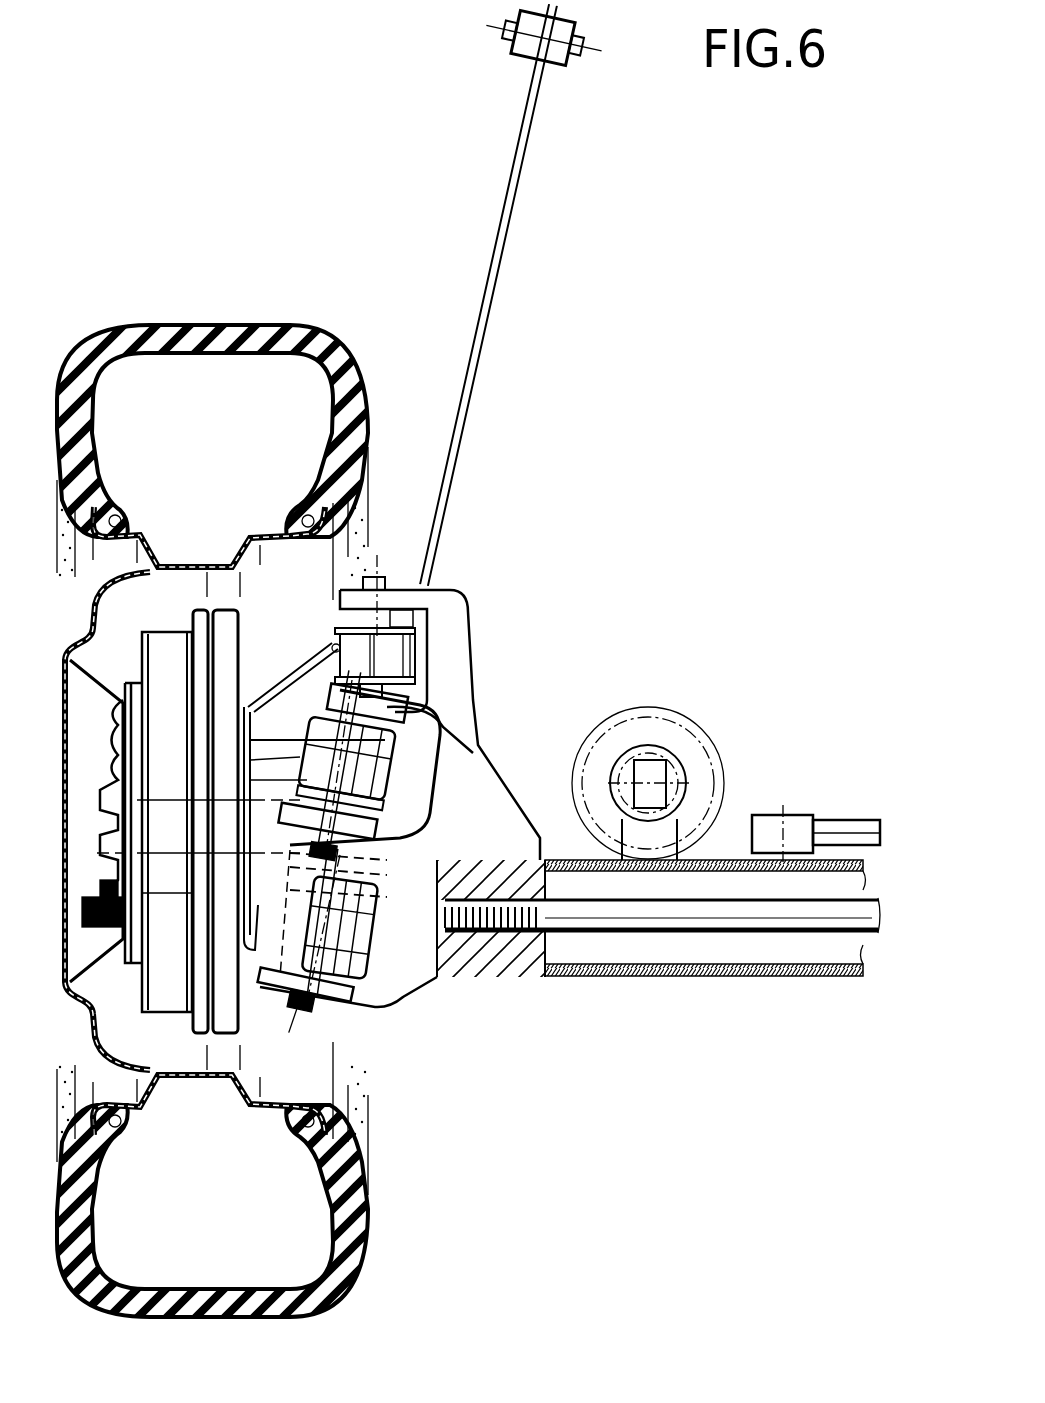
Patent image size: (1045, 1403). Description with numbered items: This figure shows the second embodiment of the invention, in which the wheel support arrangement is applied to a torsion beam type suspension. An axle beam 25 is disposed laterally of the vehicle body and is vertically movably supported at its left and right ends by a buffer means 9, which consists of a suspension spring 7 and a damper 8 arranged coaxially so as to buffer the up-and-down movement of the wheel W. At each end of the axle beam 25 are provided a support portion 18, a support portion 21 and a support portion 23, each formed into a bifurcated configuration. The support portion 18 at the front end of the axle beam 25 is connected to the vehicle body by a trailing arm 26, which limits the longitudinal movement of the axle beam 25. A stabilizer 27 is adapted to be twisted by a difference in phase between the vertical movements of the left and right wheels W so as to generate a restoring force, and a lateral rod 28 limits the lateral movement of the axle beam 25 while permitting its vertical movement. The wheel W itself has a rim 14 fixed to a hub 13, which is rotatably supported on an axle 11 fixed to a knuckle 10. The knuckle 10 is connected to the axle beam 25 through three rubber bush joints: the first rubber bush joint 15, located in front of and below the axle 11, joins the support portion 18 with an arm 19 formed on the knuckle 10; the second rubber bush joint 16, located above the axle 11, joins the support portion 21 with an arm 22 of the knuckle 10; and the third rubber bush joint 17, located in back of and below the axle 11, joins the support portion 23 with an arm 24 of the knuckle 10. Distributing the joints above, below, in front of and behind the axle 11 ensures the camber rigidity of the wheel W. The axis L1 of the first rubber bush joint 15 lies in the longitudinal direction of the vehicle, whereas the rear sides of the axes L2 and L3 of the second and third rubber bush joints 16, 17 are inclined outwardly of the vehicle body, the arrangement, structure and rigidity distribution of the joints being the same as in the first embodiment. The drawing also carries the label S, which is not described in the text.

The wheel W is at (133, 325).
The suspension spring 7 is at (647, 707).
The damper 8 is at (683, 773).
The buffer means 9 is at (742, 717).
The knuckle 10 is at (276, 686).
The axle 11 is at (173, 805).
The hub 13 is at (163, 630).
The rim 14 is at (85, 637).
The first rubber bush joint 15 is at (343, 626).
The second rubber bush joint 16 is at (392, 766).
The third rubber bush joint 17 is at (362, 956).
The support portion 18 is at (462, 612).
The arm 19 is at (334, 652).
The support portion 21 is at (432, 722).
The arm 22 is at (283, 762).
The support portion 23 is at (387, 1004).
The arm 24 is at (292, 976).
The axle beam 25 is at (660, 978).
The trailing arm 26 is at (507, 280).
The stabilizer 27 is at (787, 934).
The lateral rod 28 is at (846, 828).
The axis of first rubber bush joint L1 is at (383, 568).
The axis of second rubber bush joint L2 is at (379, 765).
The axis of third rubber bush joint L3 is at (362, 922).
The steering unit S is at (530, 689).